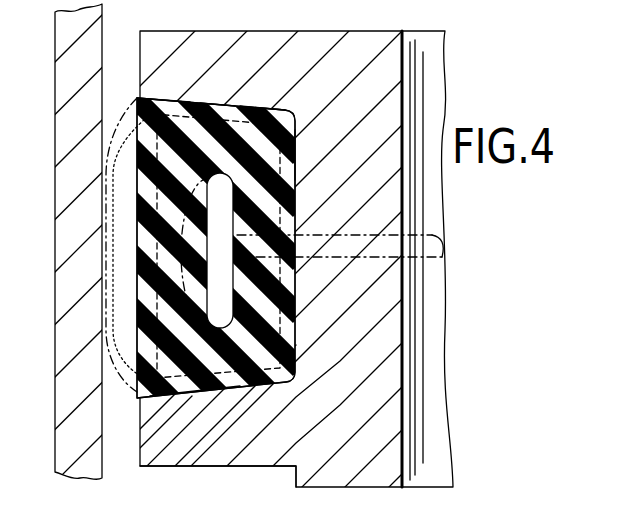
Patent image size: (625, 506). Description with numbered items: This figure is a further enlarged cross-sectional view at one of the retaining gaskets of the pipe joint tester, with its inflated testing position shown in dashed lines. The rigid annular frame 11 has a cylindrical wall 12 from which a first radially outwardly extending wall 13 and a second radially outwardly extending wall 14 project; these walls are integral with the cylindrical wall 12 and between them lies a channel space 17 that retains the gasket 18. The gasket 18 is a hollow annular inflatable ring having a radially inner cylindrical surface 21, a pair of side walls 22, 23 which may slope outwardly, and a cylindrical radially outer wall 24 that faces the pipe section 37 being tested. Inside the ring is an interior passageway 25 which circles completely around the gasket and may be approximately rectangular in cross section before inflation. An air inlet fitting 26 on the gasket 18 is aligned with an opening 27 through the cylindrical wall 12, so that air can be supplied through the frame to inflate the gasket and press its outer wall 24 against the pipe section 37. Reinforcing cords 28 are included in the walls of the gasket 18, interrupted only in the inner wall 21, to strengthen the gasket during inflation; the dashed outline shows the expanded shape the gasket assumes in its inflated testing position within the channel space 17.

The rigid annular frame 11 is at (333, 31).
The cylindrical wall 12 is at (402, 213).
The first radially outwardly extending wall 13 is at (226, 31).
The second radially outwardly extending wall 14 is at (231, 466).
The channel space 17 is at (247, 109).
The gasket 18 is at (216, 101).
The radially inner cylindrical surface 21 is at (303, 139).
The side wall 22 is at (185, 98).
The side wall 23 is at (176, 397).
The cylindrical radially outer wall 24 is at (137, 250).
The interior passageway 25 is at (218, 261).
The air inlet fitting 26 is at (298, 234).
The opening 27 is at (306, 258).
The reinforcing cords 28 is at (158, 203).
The pipe section 37 is at (57, 103).